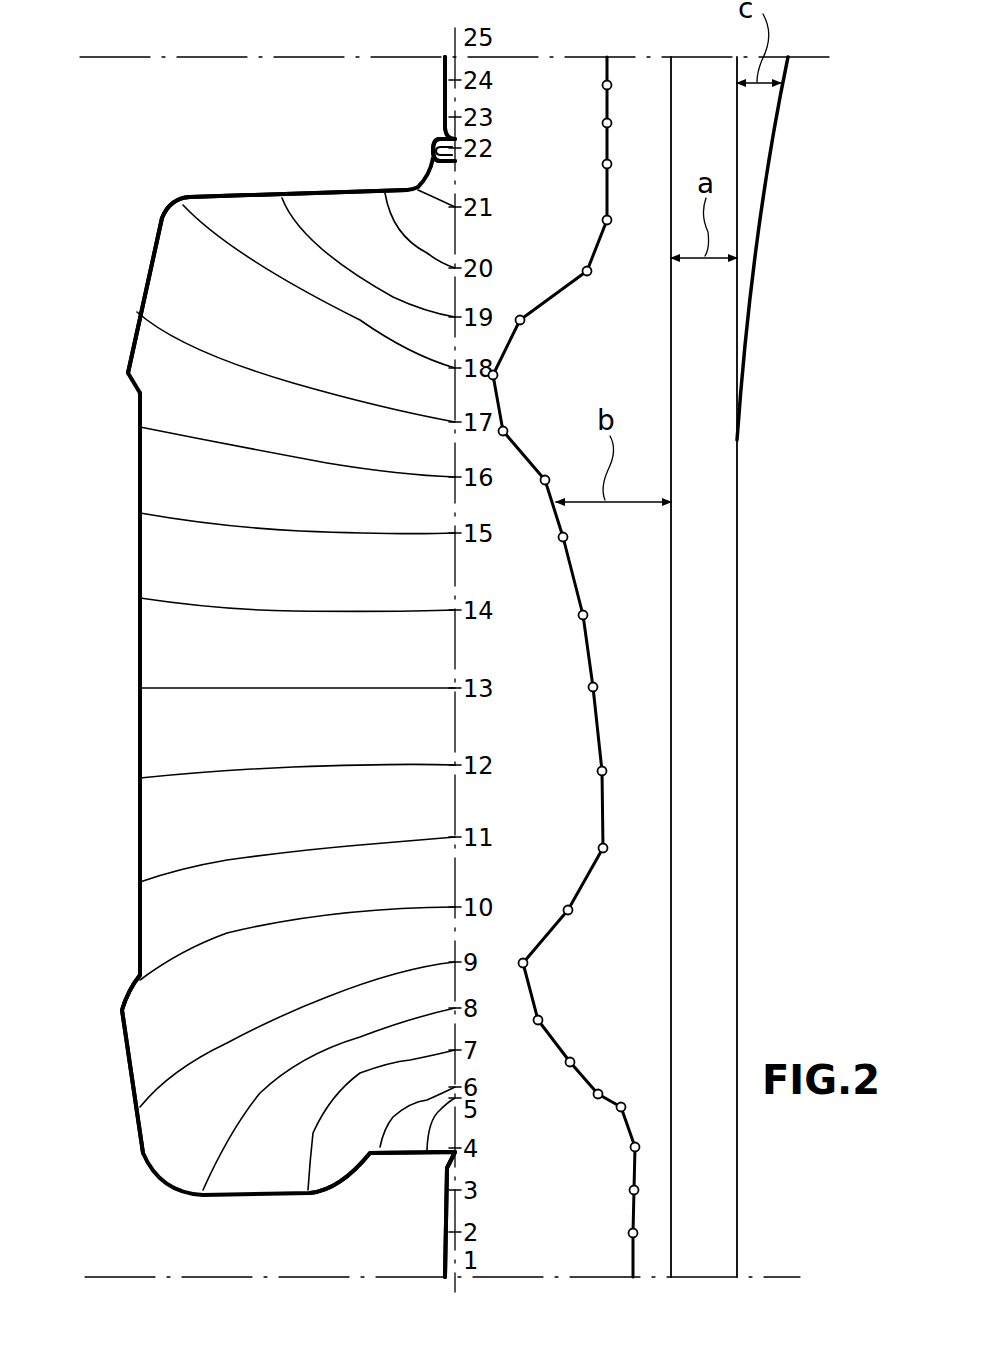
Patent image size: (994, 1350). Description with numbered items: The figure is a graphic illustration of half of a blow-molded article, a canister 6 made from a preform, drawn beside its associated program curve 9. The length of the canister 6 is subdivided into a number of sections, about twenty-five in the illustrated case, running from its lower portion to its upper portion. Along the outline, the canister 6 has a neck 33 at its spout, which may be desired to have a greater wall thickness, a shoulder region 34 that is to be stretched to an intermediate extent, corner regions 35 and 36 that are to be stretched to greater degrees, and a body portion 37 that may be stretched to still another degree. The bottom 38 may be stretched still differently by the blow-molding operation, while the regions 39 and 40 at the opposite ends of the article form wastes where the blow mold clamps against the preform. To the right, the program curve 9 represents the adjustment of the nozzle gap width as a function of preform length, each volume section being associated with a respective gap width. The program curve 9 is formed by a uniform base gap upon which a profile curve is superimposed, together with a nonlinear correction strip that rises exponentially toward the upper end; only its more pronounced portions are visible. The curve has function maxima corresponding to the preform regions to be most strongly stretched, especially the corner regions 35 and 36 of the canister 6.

The canister 6 is at (163, 207).
The program curve 9 is at (595, 660).
The neck 33 is at (431, 160).
The shoulder region 34 is at (293, 192).
The corner region 35 is at (140, 268).
The corner region 36 is at (133, 1090).
The body portion 37 is at (140, 643).
The bottom 38 is at (400, 1157).
The waste region 39 is at (444, 90).
The waste region 40 is at (443, 1213).